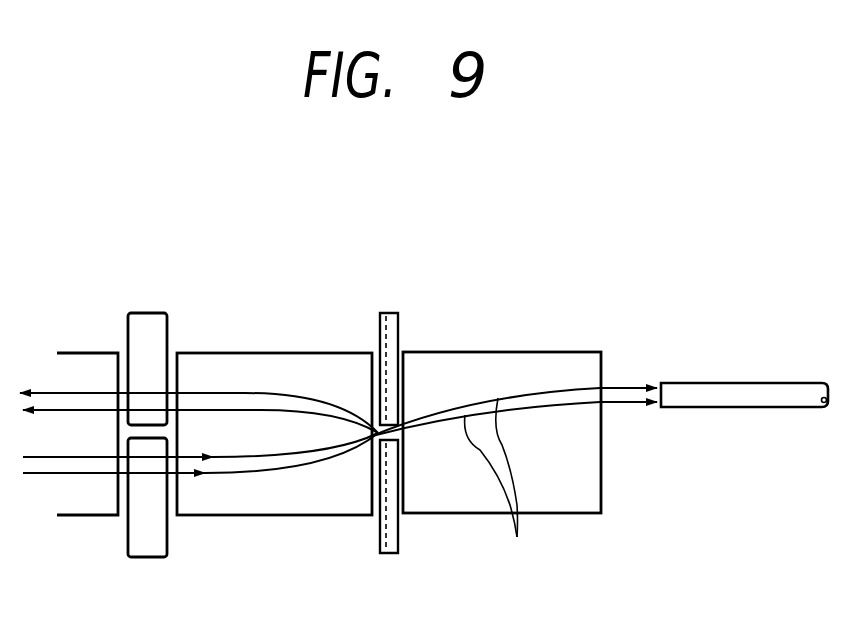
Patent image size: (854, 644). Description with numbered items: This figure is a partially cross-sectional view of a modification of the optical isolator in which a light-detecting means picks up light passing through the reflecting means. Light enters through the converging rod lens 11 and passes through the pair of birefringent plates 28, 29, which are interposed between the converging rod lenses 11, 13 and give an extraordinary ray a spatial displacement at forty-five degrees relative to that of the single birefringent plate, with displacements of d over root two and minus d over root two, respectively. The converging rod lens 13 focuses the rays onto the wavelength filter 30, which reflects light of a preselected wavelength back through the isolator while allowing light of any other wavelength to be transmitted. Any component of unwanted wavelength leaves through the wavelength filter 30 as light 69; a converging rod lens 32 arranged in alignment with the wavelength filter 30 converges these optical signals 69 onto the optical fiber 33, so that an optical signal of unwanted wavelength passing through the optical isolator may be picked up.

The converging rod lens 11 is at (95, 366).
The birefringent plate 29 is at (152, 327).
The birefringent plate 28 is at (148, 535).
The converging rod lens 13 is at (342, 366).
The wavelength filter 30 is at (399, 332).
The converging rod lens 32 is at (574, 370).
The light 69 is at (499, 489).
The optical fiber 33 is at (797, 398).